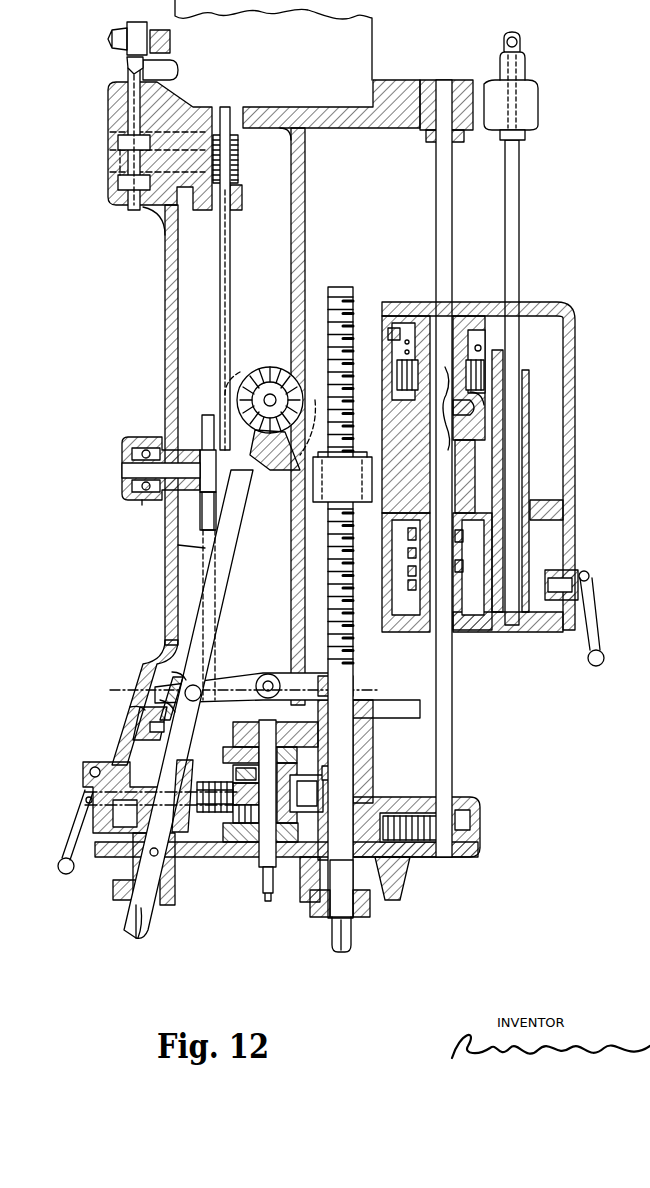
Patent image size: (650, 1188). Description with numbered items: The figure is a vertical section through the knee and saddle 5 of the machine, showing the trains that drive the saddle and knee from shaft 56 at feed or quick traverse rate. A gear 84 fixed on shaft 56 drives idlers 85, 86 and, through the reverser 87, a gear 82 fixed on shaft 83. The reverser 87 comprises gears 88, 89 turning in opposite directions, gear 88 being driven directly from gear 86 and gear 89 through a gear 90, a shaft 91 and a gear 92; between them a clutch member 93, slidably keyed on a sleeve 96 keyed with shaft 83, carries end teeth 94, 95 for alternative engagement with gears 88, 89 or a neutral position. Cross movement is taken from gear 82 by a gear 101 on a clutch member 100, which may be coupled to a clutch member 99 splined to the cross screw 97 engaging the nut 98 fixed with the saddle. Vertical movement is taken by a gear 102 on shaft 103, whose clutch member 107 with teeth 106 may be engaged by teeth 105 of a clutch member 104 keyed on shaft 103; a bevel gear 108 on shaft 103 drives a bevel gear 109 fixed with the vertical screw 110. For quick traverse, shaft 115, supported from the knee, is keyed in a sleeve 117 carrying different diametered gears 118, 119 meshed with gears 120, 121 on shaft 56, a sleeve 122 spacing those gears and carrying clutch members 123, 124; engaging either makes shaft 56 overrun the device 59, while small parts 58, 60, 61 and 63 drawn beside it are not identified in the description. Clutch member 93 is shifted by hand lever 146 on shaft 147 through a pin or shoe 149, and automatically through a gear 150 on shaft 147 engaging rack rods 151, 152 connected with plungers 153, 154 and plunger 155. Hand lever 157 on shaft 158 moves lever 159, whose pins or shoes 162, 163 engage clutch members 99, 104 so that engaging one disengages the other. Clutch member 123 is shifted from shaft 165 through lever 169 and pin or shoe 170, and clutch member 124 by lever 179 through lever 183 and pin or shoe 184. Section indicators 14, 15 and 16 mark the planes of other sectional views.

The saddle 5 is at (575, 456).
The section line 14- 14 is at (240, 745).
The section line 15- 15 is at (120, 675).
The section line 16- 16 is at (283, 942).
The shaft 56 is at (436, 248).
The bearing block 58 is at (496, 333).
The device 59 is at (494, 348).
The spring 60 is at (484, 398).
The ring 61 is at (490, 368).
The lug 63 is at (476, 412).
The gear 82 is at (275, 723).
The shaft 83 is at (258, 860).
The gear 84 is at (480, 810).
The idler gear 85 is at (394, 815).
The idler gear 86 is at (388, 830).
The reverser 87 is at (205, 840).
The gear 88 is at (298, 858).
The gear 89 is at (249, 741).
The gear 90 is at (340, 812).
The shaft 91 is at (300, 793).
The gear 92 is at (330, 780).
The clutch member 93 is at (254, 798).
The end teeth 94 is at (260, 835).
The end teeth 95 is at (277, 753).
The sleeve 96 is at (255, 817).
The cross screw 97 is at (336, 582).
The nut 98 is at (326, 502).
The clutch member 99 is at (356, 700).
The clutch member 100 is at (373, 724).
The gear 101 is at (362, 758).
The gear 102 is at (138, 740).
The shaft 103 is at (240, 545).
The clutch member 104 is at (169, 667).
The clutch teeth 105 is at (159, 697).
The clutch teeth 106 is at (122, 707).
The clutch member 107 is at (149, 739).
The bevel gear 108 is at (228, 420).
The bevel gear 109 is at (252, 370).
The vertical screw 110 is at (270, 394).
The shaft 115 is at (519, 244).
The sleeve 117 is at (529, 418).
The gear 118 is at (563, 507).
The gear 119 is at (570, 598).
The gear 120 is at (474, 494).
The gear 121 is at (412, 625).
The sleeve 122 is at (470, 625).
The clutch member 123 is at (464, 540).
The clutch member 124 is at (463, 566).
The hand lever 146 is at (78, 838).
The shaft 147 is at (85, 800).
The pin or shoe 149 is at (240, 786).
The gear 150 is at (206, 446).
The rack rod 151 is at (210, 548).
The rack rod 152 is at (220, 510).
The plunger 153 is at (148, 437).
The plunger 154 is at (150, 504).
The plunger 155 is at (134, 212).
The hand lever 157 is at (262, 888).
The shaft 158 is at (270, 674).
The lever 159 is at (236, 676).
The pin or shoe 162 is at (350, 676).
The pin or shoe 163 is at (187, 687).
The shaft 165 is at (259, 780).
The lever 169 is at (408, 540).
The pin or shoe 170 is at (410, 552).
The lever 179 is at (596, 632).
The lever 183 is at (407, 575).
The pin or shoe 184 is at (407, 589).